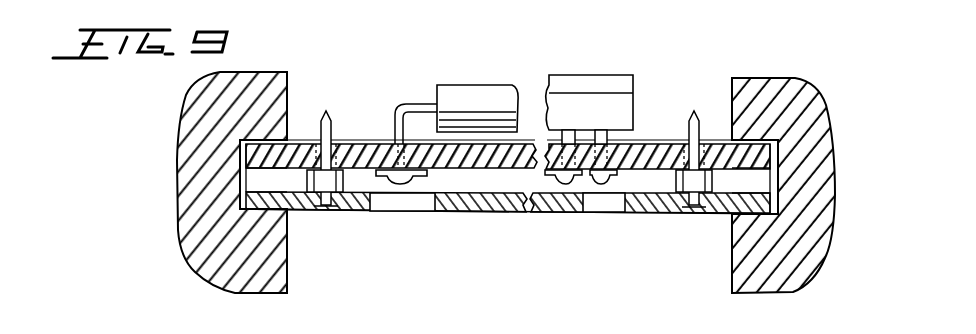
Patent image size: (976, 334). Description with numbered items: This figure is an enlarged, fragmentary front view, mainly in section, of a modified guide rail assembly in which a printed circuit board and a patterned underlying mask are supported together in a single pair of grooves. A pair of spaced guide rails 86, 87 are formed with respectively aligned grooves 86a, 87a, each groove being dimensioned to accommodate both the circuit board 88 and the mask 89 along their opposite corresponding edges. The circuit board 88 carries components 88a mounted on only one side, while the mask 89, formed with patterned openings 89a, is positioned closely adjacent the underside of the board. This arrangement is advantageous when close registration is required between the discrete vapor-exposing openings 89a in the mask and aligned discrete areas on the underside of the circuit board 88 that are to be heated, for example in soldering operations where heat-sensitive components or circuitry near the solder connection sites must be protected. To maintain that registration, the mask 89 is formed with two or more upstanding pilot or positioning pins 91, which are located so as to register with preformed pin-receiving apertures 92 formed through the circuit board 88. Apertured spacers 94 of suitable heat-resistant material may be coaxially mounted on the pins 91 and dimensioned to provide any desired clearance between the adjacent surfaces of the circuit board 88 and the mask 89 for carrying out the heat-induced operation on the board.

The guide rail 86 is at (182, 153).
The groove 86a is at (257, 180).
The guide rail 87 is at (818, 110).
The groove 87a is at (755, 183).
The circuit board 88 is at (643, 140).
The components 88a is at (548, 80).
The mask 89 is at (458, 217).
The patterned openings 89a is at (372, 207).
The pilot pins 91 is at (318, 138).
The pin-receiving apertures 92 is at (335, 150).
The apertured spacers 94 is at (352, 182).